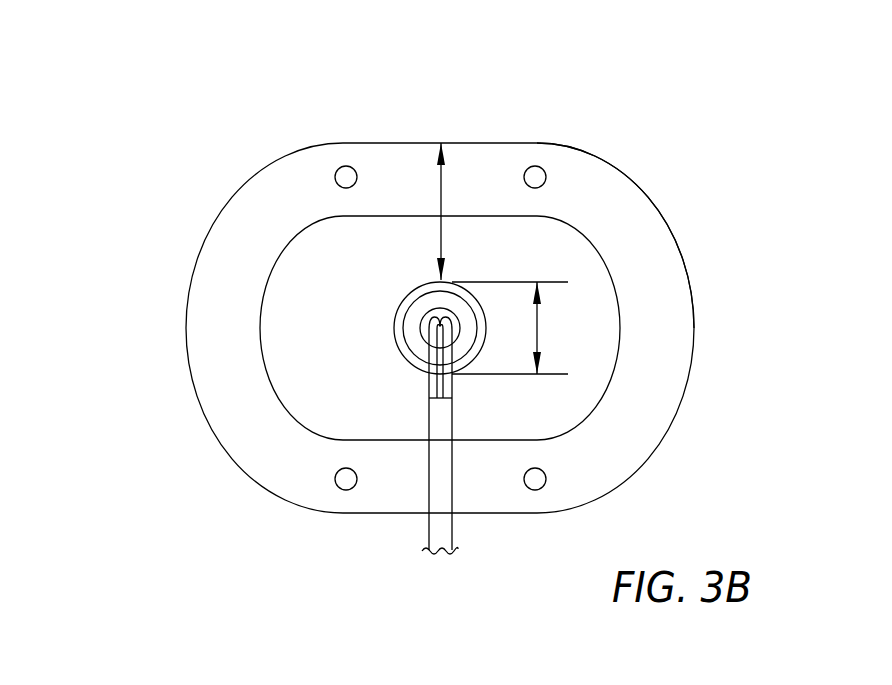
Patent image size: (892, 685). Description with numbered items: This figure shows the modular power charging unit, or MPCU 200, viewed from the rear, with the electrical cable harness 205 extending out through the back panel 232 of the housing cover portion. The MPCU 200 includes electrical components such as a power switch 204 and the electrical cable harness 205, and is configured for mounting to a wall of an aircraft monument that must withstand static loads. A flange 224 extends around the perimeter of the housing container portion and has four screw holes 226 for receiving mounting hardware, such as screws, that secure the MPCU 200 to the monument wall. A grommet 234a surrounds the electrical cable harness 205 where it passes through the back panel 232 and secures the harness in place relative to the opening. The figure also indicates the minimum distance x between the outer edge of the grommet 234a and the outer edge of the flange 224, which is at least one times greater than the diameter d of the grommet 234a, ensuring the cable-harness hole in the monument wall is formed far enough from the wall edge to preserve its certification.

The MPCU 200 is at (206, 131).
The power switch 204 is at (647, 394).
The flange 224 is at (614, 193).
The screw holes 226 is at (540, 166).
The back panel 232 is at (272, 352).
The grommet 234a is at (402, 356).
The electrical cable harness 205 is at (438, 526).